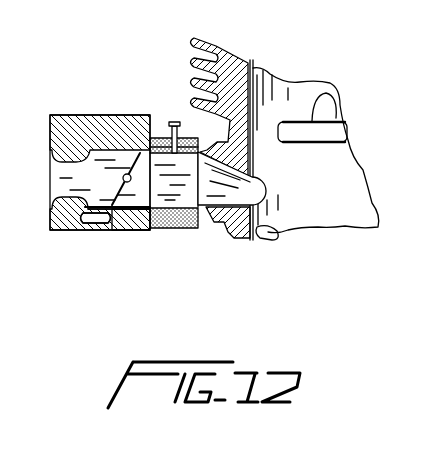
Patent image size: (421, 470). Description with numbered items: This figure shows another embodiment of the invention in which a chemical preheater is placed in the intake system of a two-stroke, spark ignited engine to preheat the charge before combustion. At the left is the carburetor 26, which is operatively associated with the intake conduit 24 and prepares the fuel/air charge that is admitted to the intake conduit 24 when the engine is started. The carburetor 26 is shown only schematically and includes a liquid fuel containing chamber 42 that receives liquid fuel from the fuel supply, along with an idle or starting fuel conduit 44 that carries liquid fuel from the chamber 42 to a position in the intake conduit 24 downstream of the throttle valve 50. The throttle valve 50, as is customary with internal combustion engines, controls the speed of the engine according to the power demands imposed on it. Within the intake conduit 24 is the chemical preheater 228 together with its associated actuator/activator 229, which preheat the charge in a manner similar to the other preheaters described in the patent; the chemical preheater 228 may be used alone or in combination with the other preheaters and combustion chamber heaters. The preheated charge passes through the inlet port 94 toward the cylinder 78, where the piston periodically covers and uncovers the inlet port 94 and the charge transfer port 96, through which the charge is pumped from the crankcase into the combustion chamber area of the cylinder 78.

The carburetor device 26 is at (76, 117).
The intake conduit 24 is at (160, 117).
The actuator/activator 229 is at (177, 118).
The chemical preheater 228 is at (183, 233).
The idle or starting fuel conduit 44 is at (136, 232).
The throttle valve 50 is at (119, 232).
The liquid fuel containing chamber 42 is at (91, 232).
The charge transfer port 96 is at (330, 90).
The inlet port 94 is at (265, 196).
The cylinder 78 is at (276, 236).